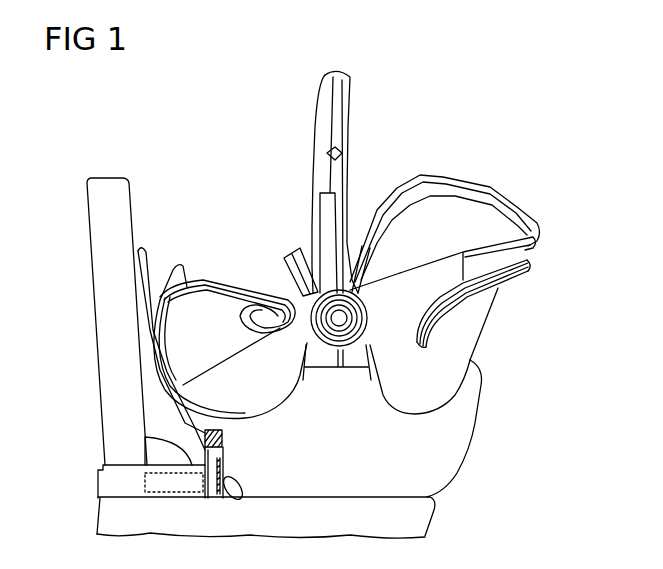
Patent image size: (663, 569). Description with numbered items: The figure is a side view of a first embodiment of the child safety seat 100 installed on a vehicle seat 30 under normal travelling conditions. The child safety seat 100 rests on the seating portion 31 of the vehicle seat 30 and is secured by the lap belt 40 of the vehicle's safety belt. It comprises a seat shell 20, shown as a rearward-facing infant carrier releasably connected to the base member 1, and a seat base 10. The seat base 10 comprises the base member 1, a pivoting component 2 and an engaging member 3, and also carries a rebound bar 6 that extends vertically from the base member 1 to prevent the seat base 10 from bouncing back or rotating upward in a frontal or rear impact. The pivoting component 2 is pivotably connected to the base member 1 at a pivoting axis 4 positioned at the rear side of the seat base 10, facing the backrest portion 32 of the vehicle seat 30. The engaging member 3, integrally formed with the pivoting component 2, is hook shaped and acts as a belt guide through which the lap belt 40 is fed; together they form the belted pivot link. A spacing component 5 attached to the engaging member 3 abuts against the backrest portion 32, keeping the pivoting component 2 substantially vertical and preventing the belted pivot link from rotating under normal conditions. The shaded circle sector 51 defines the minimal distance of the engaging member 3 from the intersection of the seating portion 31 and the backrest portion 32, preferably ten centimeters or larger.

The child safety seat 100 is at (508, 173).
The base member 1 is at (467, 403).
The seat base 10 is at (475, 450).
The seat shell 20 is at (277, 275).
The vehicle seat 30 is at (100, 175).
The seating portion 31 is at (428, 519).
The backrest portion 32 is at (108, 280).
The lap belt 40 is at (105, 483).
The shaded circle sector 51 is at (157, 453).
The rebound bar 6 is at (142, 247).
The pivoting component 2 is at (226, 460).
The engaging member 3 is at (241, 496).
The pivoting axis 4 is at (222, 433).
The spacing component 5 is at (181, 504).